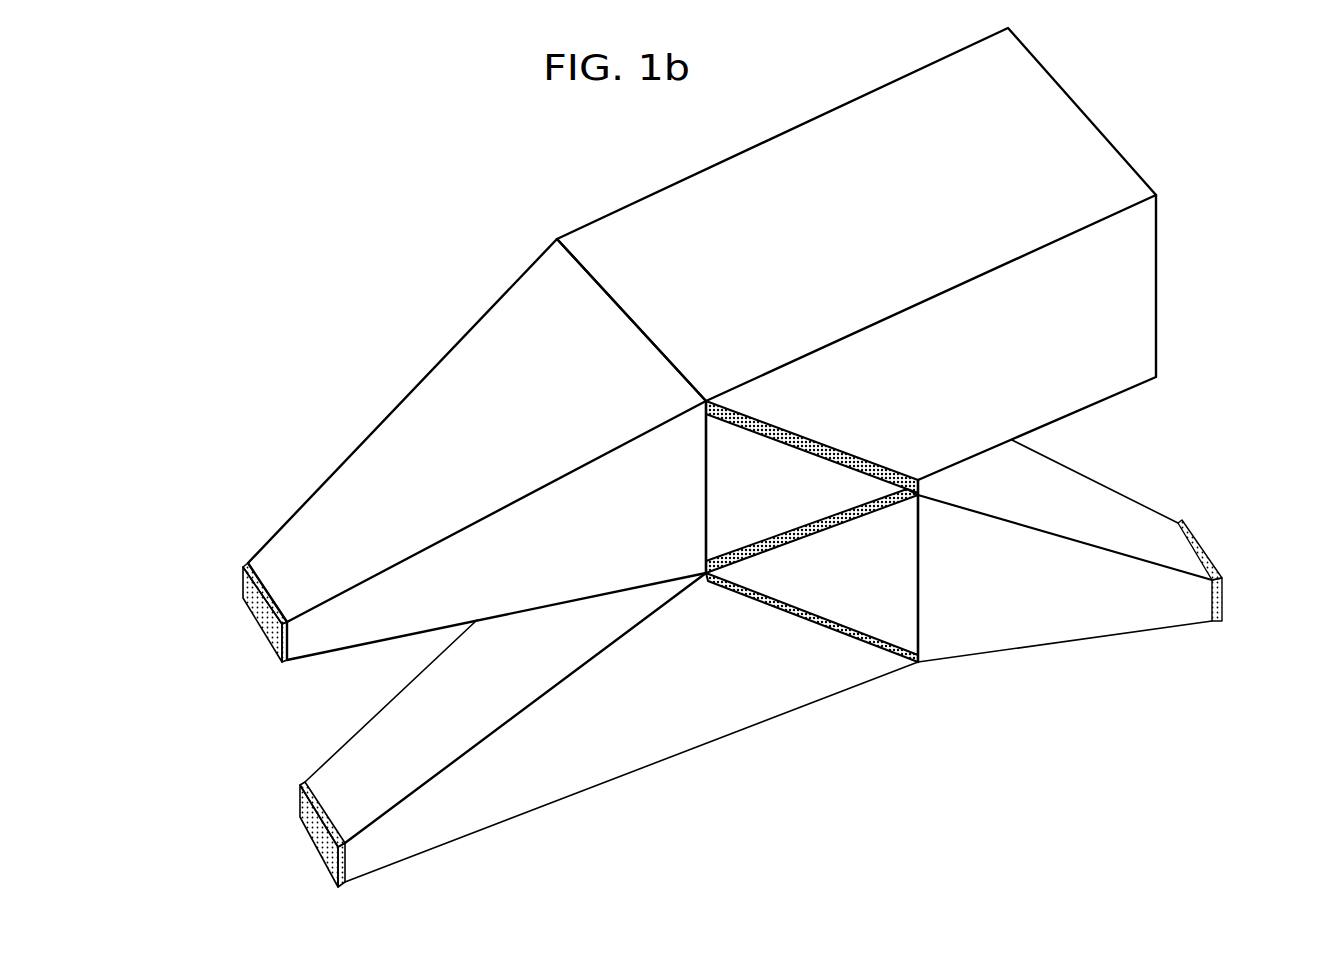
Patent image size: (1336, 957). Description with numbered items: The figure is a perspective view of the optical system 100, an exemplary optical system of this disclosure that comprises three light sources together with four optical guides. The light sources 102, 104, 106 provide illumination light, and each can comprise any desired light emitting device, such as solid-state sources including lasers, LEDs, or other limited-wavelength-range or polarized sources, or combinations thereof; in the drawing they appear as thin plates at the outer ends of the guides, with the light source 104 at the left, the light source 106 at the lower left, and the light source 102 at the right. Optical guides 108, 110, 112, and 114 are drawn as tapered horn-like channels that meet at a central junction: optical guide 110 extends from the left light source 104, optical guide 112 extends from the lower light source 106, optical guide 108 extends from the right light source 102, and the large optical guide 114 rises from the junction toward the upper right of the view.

The optical system 100 is at (463, 161).
The light source 102 is at (1222, 604).
The light source 104 is at (258, 620).
The light source 106 is at (320, 845).
The optical guide 108 is at (1053, 503).
The optical guide 110 is at (507, 456).
The optical guide 112 is at (734, 675).
The optical guide 114 is at (866, 232).